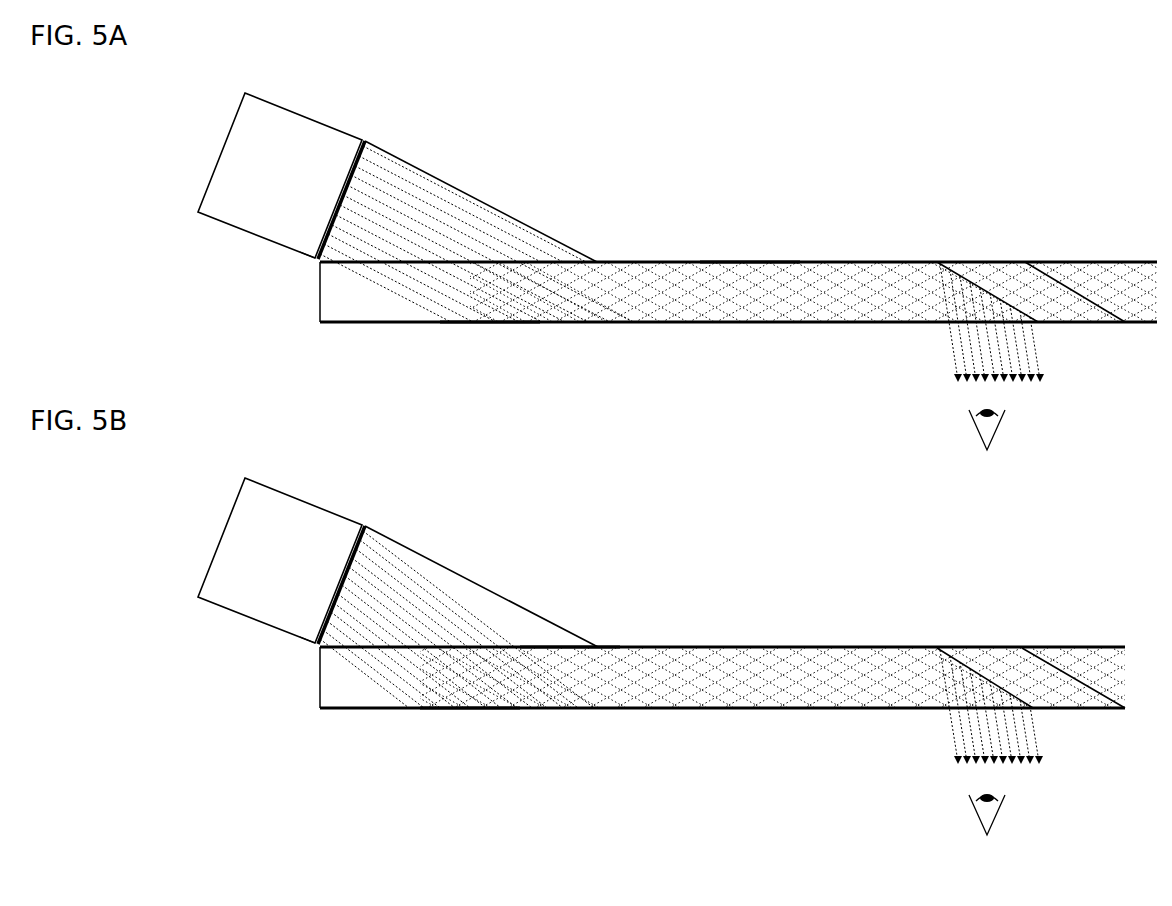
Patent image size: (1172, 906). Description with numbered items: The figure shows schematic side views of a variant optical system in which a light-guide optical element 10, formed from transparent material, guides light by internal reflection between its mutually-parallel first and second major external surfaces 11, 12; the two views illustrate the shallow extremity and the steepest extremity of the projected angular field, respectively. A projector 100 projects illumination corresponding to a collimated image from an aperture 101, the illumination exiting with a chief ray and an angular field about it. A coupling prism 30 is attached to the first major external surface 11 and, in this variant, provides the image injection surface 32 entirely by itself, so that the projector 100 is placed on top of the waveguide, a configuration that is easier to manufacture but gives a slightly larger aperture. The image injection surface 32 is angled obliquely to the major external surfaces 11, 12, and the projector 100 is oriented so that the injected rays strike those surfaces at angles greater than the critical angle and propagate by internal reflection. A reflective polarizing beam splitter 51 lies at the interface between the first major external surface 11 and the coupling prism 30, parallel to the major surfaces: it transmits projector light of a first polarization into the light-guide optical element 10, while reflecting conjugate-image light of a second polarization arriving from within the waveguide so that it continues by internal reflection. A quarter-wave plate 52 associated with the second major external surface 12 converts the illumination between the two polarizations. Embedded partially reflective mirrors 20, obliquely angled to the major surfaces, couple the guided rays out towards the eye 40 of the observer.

In FIG. 5A, the light-guide optical element 10 is at (737, 310).
In FIG. 5B, the light-guide optical element 10 is at (737, 698).
In FIG. 5A, the first major external surface 11 is at (836, 262).
In FIG. 5B, the first major external surface 11 is at (840, 648).
In FIG. 5A, the second major external surface 12 is at (858, 323).
In FIG. 5B, the second major external surface 12 is at (858, 708).
In FIG. 5A, the partially reflective mirrors 20 is at (1048, 262).
In FIG. 5B, the partially reflective mirrors 20 is at (1048, 648).
In FIG. 5A, the coupling prism 30 is at (450, 186).
In FIG. 5B, the coupling prism 30 is at (450, 571).
In FIG. 5A, the image injection surface 32 is at (372, 137).
In FIG. 5B, the image injection surface 32 is at (374, 522).
In FIG. 5A, the eye 40 is at (970, 437).
In FIG. 5B, the eye 40 is at (970, 822).
In FIG. 5A, the reflective polarizing beam splitter 51 is at (742, 262).
In FIG. 5B, the reflective polarizing beam splitter 51 is at (560, 647).
In FIG. 5A, the quarter-wave plate 52 is at (480, 323).
In FIG. 5B, the quarter-wave plate 52 is at (460, 708).
In FIG. 5A, the projector 100 is at (234, 125).
In FIG. 5B, the projector 100 is at (234, 510).
In FIG. 5A, the aperture 101 is at (322, 246).
In FIG. 5B, the aperture 101 is at (322, 631).